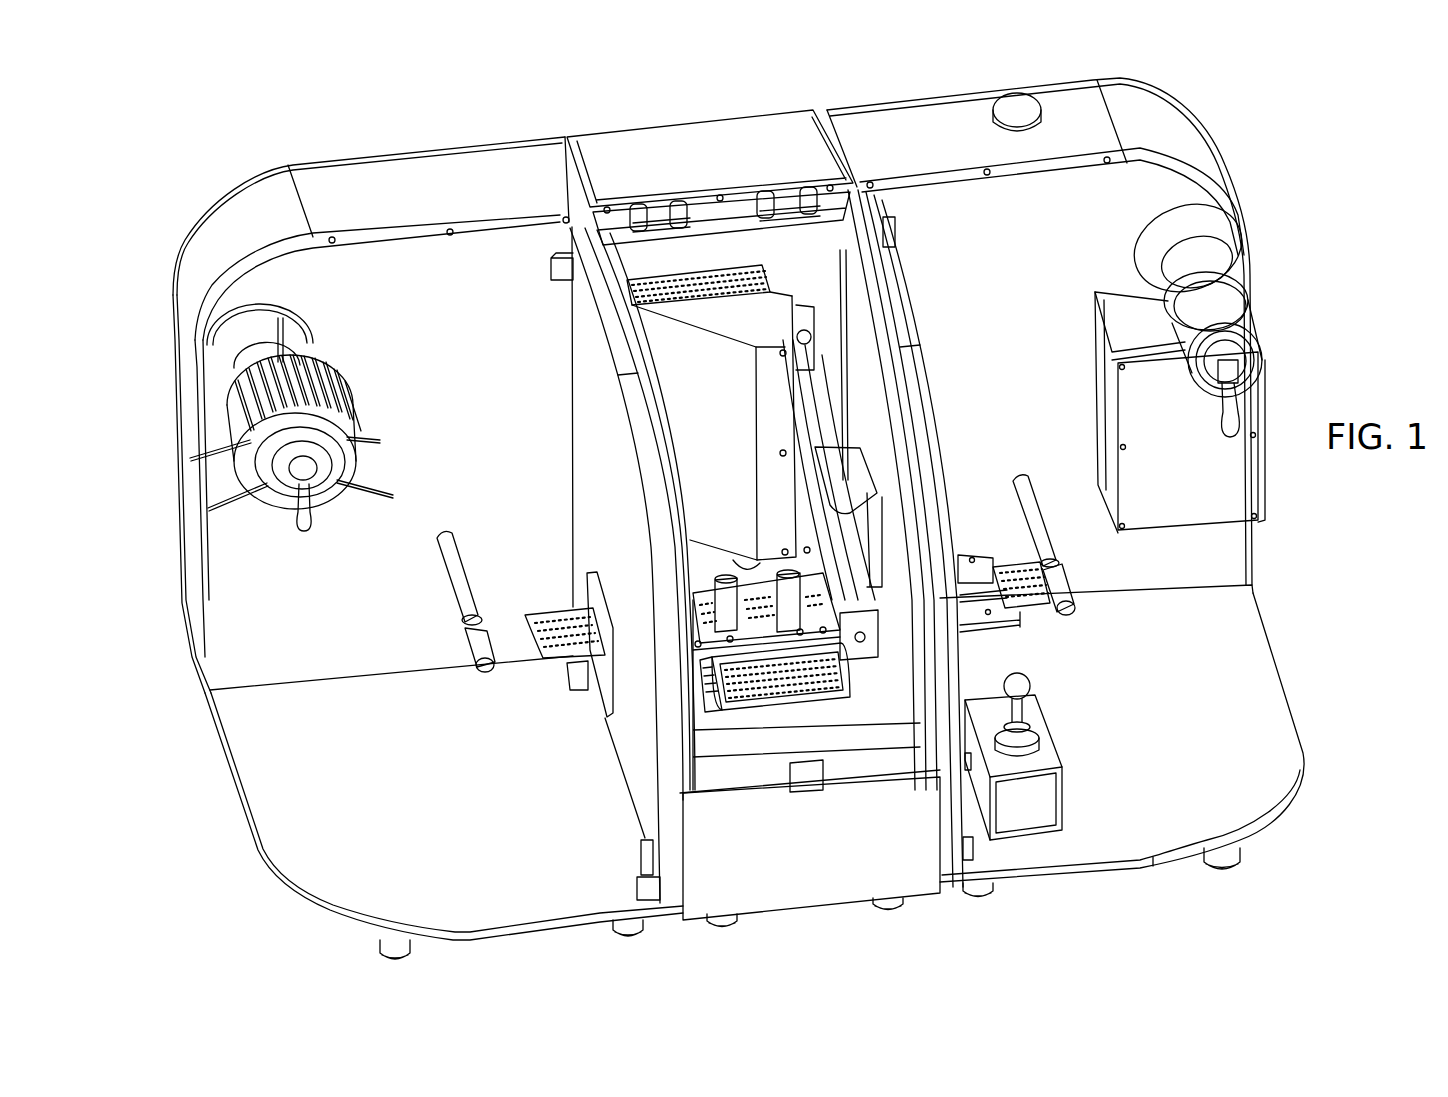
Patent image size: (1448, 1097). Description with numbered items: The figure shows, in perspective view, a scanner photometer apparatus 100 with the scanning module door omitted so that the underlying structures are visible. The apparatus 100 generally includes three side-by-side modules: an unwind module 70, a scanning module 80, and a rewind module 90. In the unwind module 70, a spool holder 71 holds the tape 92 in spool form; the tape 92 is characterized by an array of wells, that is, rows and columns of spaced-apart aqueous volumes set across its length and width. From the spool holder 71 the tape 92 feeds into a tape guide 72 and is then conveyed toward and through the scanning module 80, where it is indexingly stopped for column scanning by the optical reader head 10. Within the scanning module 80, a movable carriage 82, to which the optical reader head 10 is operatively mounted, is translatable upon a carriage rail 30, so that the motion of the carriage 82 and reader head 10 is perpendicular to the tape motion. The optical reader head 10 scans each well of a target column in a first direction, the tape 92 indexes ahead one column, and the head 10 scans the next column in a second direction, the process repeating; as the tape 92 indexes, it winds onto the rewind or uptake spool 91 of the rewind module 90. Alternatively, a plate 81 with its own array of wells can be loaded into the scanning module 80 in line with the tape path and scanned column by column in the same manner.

The scanner photometer apparatus 100 is at (148, 495).
The rewind module 90 is at (350, 137).
The rewind or uptake spool 91 is at (258, 398).
The tape 92 is at (542, 636).
The scanning module 80 is at (668, 110).
The optical reader head 10 is at (750, 320).
The carriage rail 30 is at (850, 654).
The plate 81 is at (780, 680).
The movable carriage 82 is at (863, 614).
The unwind module 70 is at (977, 85).
The spool holder 71 is at (1240, 318).
The tape guide 72 is at (1015, 623).